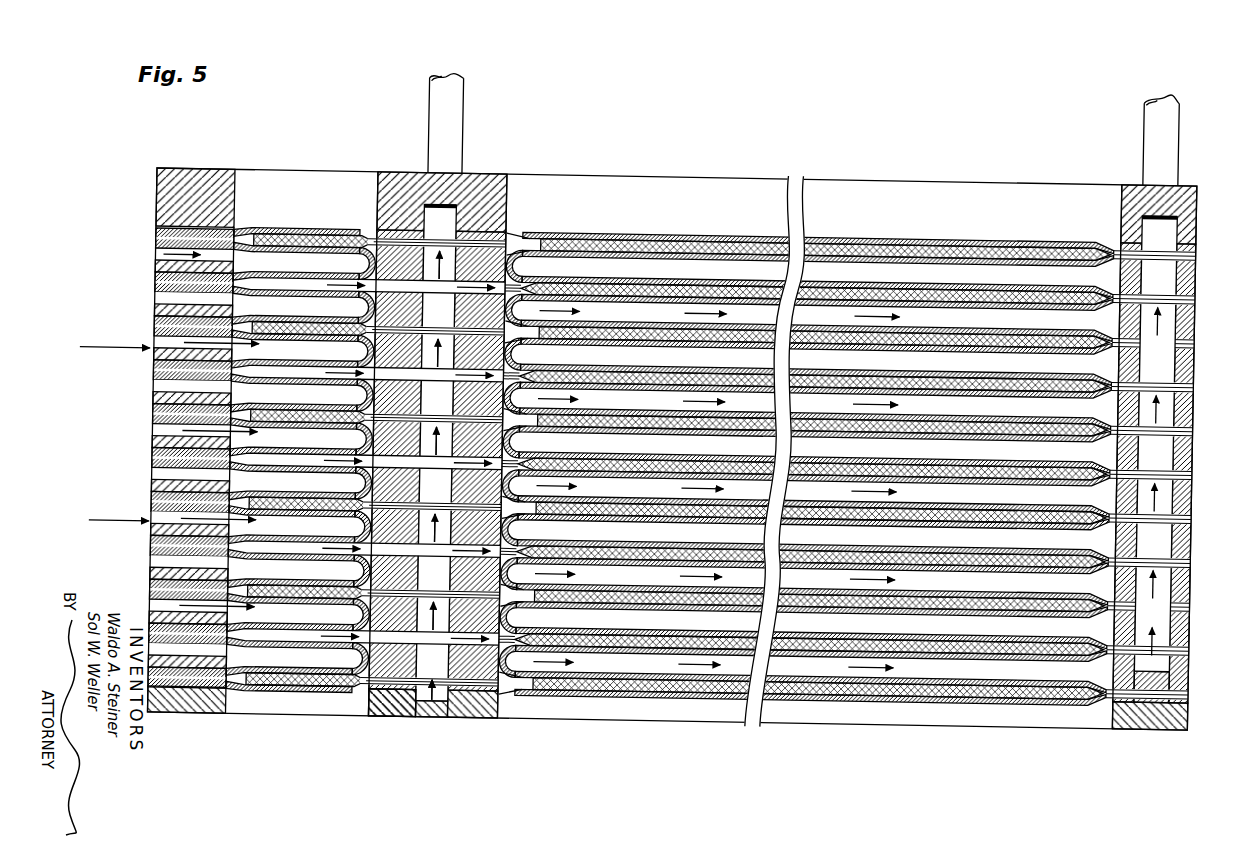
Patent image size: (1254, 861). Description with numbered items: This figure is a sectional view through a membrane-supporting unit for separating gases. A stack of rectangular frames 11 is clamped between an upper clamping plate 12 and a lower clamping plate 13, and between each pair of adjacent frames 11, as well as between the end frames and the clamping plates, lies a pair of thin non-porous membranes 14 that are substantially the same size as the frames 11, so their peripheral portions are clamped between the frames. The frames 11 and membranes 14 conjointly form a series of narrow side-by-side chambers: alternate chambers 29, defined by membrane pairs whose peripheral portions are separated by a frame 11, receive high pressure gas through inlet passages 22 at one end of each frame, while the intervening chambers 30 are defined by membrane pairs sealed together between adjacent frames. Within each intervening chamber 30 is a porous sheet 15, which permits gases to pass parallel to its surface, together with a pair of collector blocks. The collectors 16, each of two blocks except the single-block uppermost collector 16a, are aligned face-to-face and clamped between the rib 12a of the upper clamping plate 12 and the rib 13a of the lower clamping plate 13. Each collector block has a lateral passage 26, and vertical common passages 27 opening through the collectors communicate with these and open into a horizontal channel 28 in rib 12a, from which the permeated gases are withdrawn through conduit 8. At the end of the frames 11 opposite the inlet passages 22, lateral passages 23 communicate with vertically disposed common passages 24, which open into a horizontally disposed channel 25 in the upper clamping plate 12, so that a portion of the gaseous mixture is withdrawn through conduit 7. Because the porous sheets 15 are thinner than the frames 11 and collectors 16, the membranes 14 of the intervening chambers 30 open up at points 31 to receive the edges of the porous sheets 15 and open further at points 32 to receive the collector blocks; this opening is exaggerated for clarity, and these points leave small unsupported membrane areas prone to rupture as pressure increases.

The conduit 7 is at (1180, 141).
The conduit 8 is at (465, 123).
The rectangular frames 11 is at (668, 464).
The upper clamping plate 12 is at (1173, 199).
The rib of upper clamping plate 12a is at (466, 181).
The lower clamping plate 13 is at (1173, 721).
The rib of lower clamping plate 13a is at (394, 720).
The thin non-porous membranes 14 is at (670, 477).
The porous sheet 15 is at (777, 451).
The collectors 16 is at (430, 452).
The uppermost collector 16a is at (506, 441).
The inlet passages 22 is at (159, 411).
The lateral passages 23 is at (1099, 472).
The vertically disposed common passages 24 is at (1189, 444).
The horizontally disposed channel 25 is at (1193, 241).
The lateral passages 26 is at (413, 422).
The common passages 27 is at (455, 730).
The horizontal channel 28 is at (390, 197).
The alternate chambers 29 is at (670, 454).
The intervening chambers 30 is at (677, 529).
The points where membranes open up 31 is at (679, 716).
The points where membranes open up 32 is at (441, 705).